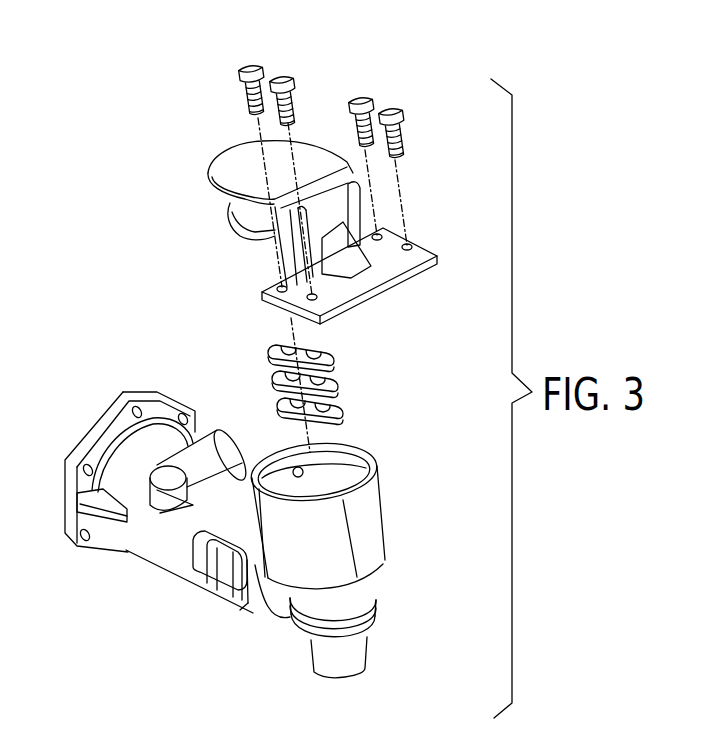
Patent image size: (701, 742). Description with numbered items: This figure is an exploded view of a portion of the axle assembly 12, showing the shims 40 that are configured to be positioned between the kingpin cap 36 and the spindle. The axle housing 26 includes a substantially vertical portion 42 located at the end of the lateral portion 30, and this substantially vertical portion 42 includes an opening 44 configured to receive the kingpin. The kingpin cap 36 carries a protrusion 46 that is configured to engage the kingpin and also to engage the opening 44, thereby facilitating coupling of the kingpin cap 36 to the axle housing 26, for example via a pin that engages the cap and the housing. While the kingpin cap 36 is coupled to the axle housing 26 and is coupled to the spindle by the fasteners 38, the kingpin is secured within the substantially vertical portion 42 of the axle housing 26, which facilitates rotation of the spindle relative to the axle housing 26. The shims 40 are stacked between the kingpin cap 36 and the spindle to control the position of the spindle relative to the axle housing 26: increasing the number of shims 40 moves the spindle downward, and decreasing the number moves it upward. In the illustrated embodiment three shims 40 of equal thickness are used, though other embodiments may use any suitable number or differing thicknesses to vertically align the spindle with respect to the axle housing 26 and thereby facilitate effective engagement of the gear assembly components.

The axle assembly 12 is at (117, 228).
The axle housing 26 is at (161, 432).
The lateral portion 30 is at (167, 577).
The kingpin cap 36 is at (237, 163).
The fasteners 38 is at (259, 66).
The shims 40 is at (341, 409).
The substantially vertical portion 42 is at (363, 520).
The opening 44 is at (328, 470).
The protrusion 46 is at (257, 240).